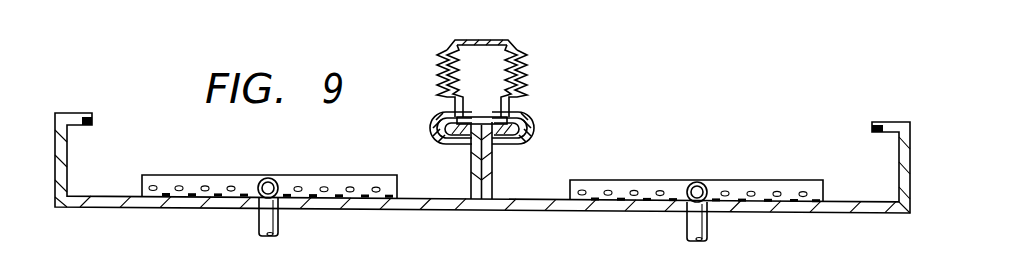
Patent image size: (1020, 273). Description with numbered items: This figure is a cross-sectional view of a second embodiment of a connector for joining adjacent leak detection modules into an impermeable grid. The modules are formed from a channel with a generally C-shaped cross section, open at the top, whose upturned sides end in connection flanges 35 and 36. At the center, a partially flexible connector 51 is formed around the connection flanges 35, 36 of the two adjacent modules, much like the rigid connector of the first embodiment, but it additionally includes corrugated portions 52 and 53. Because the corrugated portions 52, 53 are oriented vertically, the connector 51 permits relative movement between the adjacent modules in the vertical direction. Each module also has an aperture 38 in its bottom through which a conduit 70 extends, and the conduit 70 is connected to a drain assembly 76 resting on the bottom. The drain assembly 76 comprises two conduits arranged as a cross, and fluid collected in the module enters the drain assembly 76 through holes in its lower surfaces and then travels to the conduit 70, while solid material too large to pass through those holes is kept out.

The connection flange 35 is at (526, 113).
The connection flange 36 is at (432, 118).
The aperture 38 is at (255, 207).
The partially flexible connector 51 is at (533, 136).
The corrugated portion 52 is at (522, 74).
The corrugated portion 53 is at (441, 70).
The conduit 70 is at (279, 218).
The drain assembly 76 is at (205, 175).